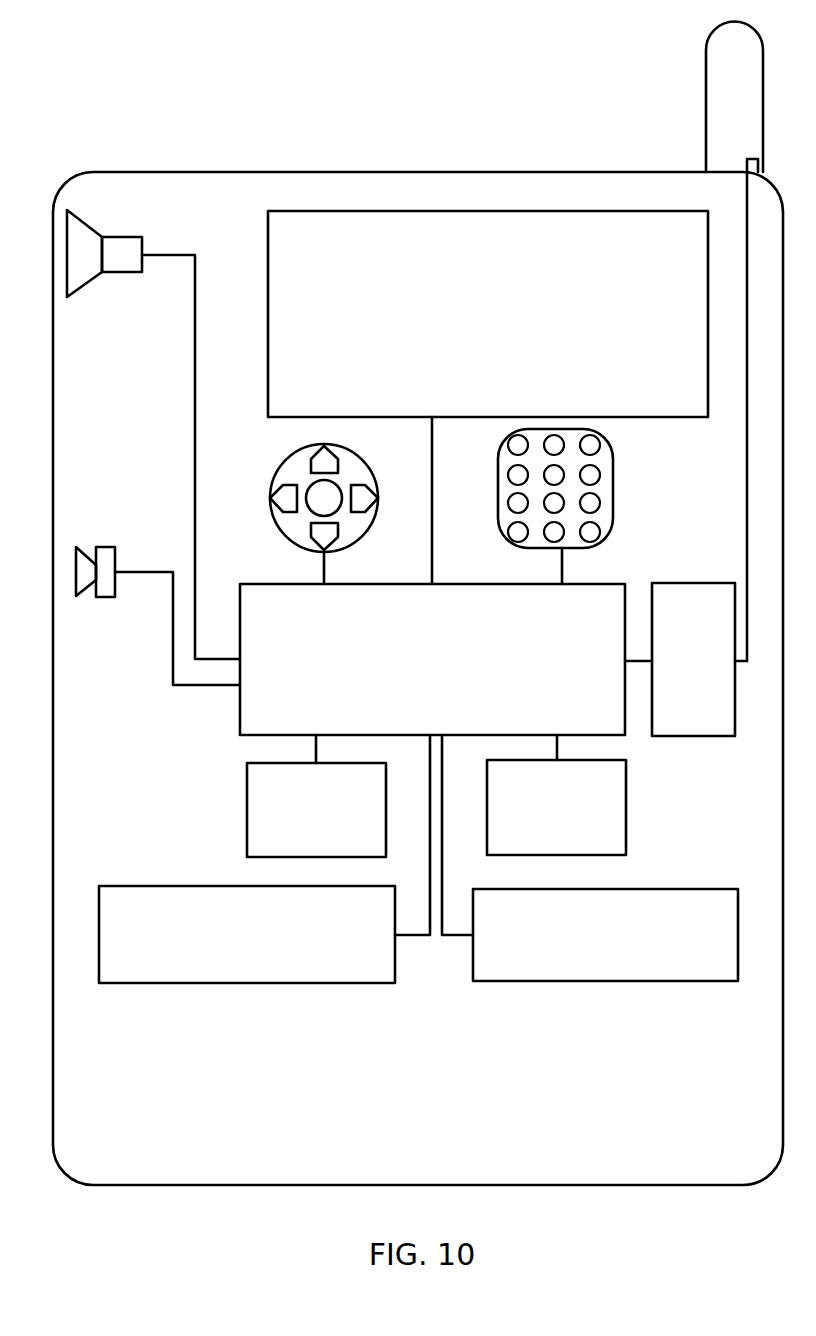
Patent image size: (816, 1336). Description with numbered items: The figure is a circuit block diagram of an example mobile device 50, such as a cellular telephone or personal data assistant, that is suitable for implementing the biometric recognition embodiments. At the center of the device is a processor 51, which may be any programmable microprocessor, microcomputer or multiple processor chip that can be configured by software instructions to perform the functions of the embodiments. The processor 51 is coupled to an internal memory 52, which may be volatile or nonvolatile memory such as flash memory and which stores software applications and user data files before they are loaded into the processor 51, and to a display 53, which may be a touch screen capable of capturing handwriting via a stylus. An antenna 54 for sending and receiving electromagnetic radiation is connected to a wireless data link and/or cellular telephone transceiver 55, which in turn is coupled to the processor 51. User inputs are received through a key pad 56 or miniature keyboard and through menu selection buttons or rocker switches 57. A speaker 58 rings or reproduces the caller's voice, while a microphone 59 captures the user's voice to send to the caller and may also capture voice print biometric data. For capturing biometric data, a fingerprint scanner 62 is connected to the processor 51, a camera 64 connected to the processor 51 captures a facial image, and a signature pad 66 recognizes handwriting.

The mobile device 50 is at (344, 172).
The processor 51 is at (432, 759).
The internal memory 52 is at (247, 934).
The display 53 is at (488, 397).
The antenna 54 is at (706, 67).
The cellular telephone transceiver 55 is at (686, 659).
The key pad 56 is at (613, 477).
The rocker switches 57 is at (271, 503).
The speaker 58 is at (105, 237).
The microphone 59 is at (100, 598).
The fingerprint scanner 62 is at (605, 935).
The camera 64 is at (316, 796).
The signature pad 66 is at (556, 795).